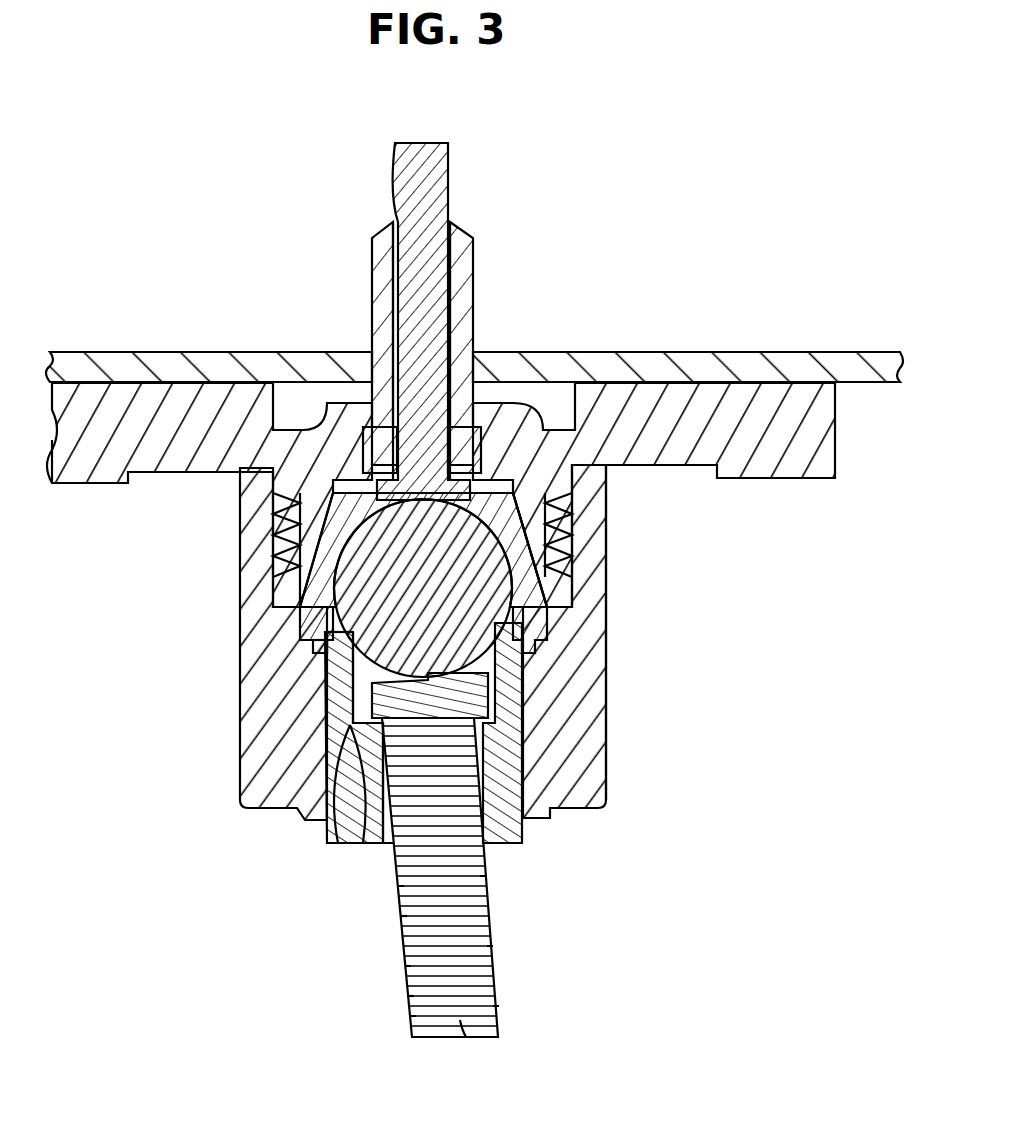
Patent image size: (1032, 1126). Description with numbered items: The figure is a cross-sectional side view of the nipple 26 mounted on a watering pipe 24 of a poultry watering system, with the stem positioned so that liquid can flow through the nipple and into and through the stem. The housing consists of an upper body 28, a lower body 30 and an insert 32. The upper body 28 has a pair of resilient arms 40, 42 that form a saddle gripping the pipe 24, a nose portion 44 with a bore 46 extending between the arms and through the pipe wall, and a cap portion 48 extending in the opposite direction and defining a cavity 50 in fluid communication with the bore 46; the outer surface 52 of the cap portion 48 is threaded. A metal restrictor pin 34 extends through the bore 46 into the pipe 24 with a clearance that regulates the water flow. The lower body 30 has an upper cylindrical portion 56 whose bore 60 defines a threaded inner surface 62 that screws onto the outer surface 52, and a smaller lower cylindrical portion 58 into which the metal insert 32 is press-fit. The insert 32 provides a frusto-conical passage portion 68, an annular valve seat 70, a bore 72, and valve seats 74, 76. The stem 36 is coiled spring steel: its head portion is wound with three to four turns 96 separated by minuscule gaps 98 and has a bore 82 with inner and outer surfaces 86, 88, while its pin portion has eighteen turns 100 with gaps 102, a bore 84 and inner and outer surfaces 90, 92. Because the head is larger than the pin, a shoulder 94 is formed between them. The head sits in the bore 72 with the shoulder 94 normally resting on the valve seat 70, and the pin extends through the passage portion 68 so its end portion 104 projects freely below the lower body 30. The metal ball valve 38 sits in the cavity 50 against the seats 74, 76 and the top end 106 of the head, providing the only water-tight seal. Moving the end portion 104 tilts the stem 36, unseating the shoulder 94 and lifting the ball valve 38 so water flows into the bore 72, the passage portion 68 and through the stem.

The watering pipe 24 is at (776, 352).
The nipple 26 is at (606, 681).
The upper body 28 is at (138, 472).
The lower body 30 is at (600, 800).
The insert 32 is at (518, 840).
The restrictor pin 34 is at (446, 158).
The stem 36 is at (496, 976).
The ball valve 38 is at (490, 577).
The resilient arm 40 is at (76, 478).
The resilient arm 42 is at (782, 480).
The nose portion 44 is at (478, 251).
The bore 46 is at (452, 224).
The cap portion 48 is at (572, 532).
The cavity 50 is at (545, 512).
The outer surface 52 is at (550, 568).
The upper cylindrical portion 56 is at (262, 500).
The lower cylindrical portion 58 is at (270, 750).
The bore 60 is at (298, 602).
The inner surface 62 is at (286, 520).
The frusto-conical passage portion 68 is at (377, 848).
The valve seat 70 is at (338, 798).
The bore 72 is at (530, 640).
The valve seat 74 is at (318, 655).
The valve seat 76 is at (312, 642).
The bore 82 is at (522, 782).
The bore 84 is at (464, 1022).
The inner surface 86 is at (248, 795).
The outer surface 88 is at (335, 695).
The inner surface 90 is at (402, 928).
The outer surface 92 is at (408, 1000).
The shoulder 94 is at (338, 850).
The turns 96 is at (492, 700).
The gaps 98 is at (496, 722).
The turns 100 is at (396, 890).
The gaps 102 is at (494, 948).
The end portion 104 is at (424, 1040).
The top end 106 is at (333, 664).